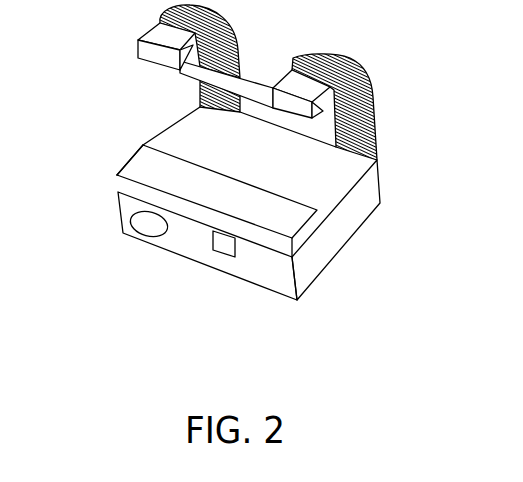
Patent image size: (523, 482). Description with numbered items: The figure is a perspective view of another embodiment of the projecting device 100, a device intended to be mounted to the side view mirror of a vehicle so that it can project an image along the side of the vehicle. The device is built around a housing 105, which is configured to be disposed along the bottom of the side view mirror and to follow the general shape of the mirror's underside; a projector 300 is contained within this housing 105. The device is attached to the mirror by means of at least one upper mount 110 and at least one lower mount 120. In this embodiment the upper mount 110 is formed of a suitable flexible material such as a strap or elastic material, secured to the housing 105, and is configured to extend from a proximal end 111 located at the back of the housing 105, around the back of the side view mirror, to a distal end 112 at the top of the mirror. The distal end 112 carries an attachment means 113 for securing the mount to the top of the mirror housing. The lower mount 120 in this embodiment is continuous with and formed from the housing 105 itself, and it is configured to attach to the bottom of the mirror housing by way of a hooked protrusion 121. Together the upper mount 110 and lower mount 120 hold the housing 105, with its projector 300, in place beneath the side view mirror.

The projecting device 100 is at (246, 194).
The housing 105 is at (357, 220).
The upper mount 110 is at (246, 89).
The proximal end 111 is at (376, 161).
The distal end 112 is at (133, 61).
The attachment means 113 is at (290, 83).
The lower mount 120 is at (191, 214).
The hooked protrusion 121 is at (278, 225).
The projector 300 is at (147, 228).